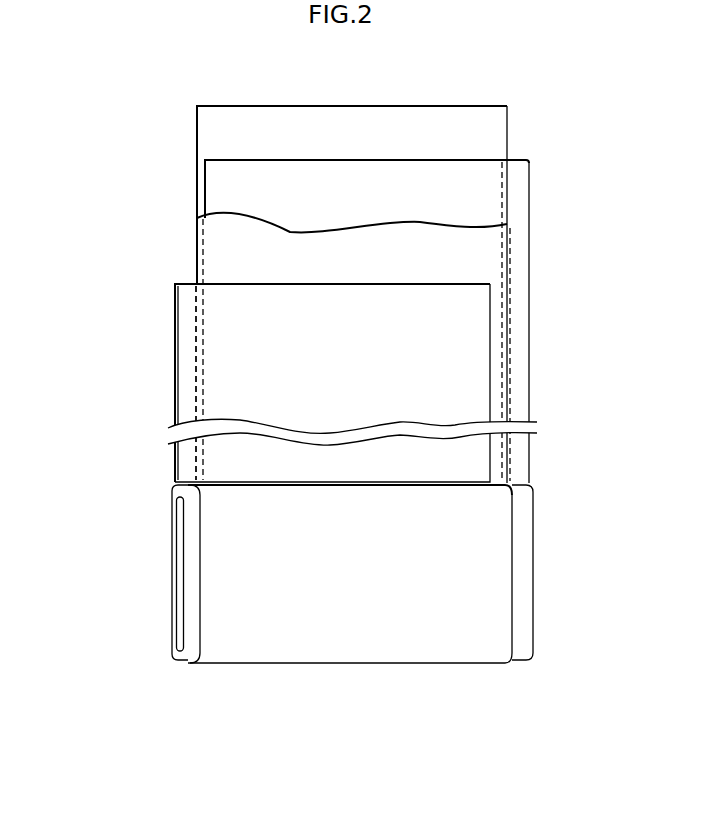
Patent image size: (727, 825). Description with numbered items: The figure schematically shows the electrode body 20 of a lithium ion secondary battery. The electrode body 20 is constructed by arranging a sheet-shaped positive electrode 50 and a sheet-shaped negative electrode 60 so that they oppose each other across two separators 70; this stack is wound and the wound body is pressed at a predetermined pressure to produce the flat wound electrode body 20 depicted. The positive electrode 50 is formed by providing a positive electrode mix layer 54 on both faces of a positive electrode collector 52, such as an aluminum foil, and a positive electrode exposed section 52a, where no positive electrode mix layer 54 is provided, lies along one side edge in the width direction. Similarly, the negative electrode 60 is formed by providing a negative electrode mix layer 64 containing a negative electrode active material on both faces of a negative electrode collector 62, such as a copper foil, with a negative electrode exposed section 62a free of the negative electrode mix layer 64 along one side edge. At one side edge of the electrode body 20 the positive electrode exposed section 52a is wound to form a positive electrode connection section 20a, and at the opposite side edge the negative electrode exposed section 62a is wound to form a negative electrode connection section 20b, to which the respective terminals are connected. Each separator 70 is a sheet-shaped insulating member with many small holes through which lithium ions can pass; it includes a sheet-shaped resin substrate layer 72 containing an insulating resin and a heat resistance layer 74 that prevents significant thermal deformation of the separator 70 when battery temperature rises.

The electrode body 20 is at (351, 611).
The positive electrode connection section 20a is at (193, 563).
The negative electrode connection section 20b is at (521, 575).
The positive electrode 50 is at (271, 383).
The positive electrode collector 52 is at (175, 414).
The positive electrode exposed section 52a is at (190, 386).
The positive electrode mix layer 54 is at (232, 303).
The negative electrode 60 is at (419, 318).
The negative electrode collector 62 is at (532, 330).
The negative electrode exposed section 62a is at (518, 299).
The negative electrode mix layer 64 is at (495, 184).
The separator 70 is at (279, 294).
The resin substrate layer 72 is at (279, 294).
The heat resistance layer 74 is at (215, 251).